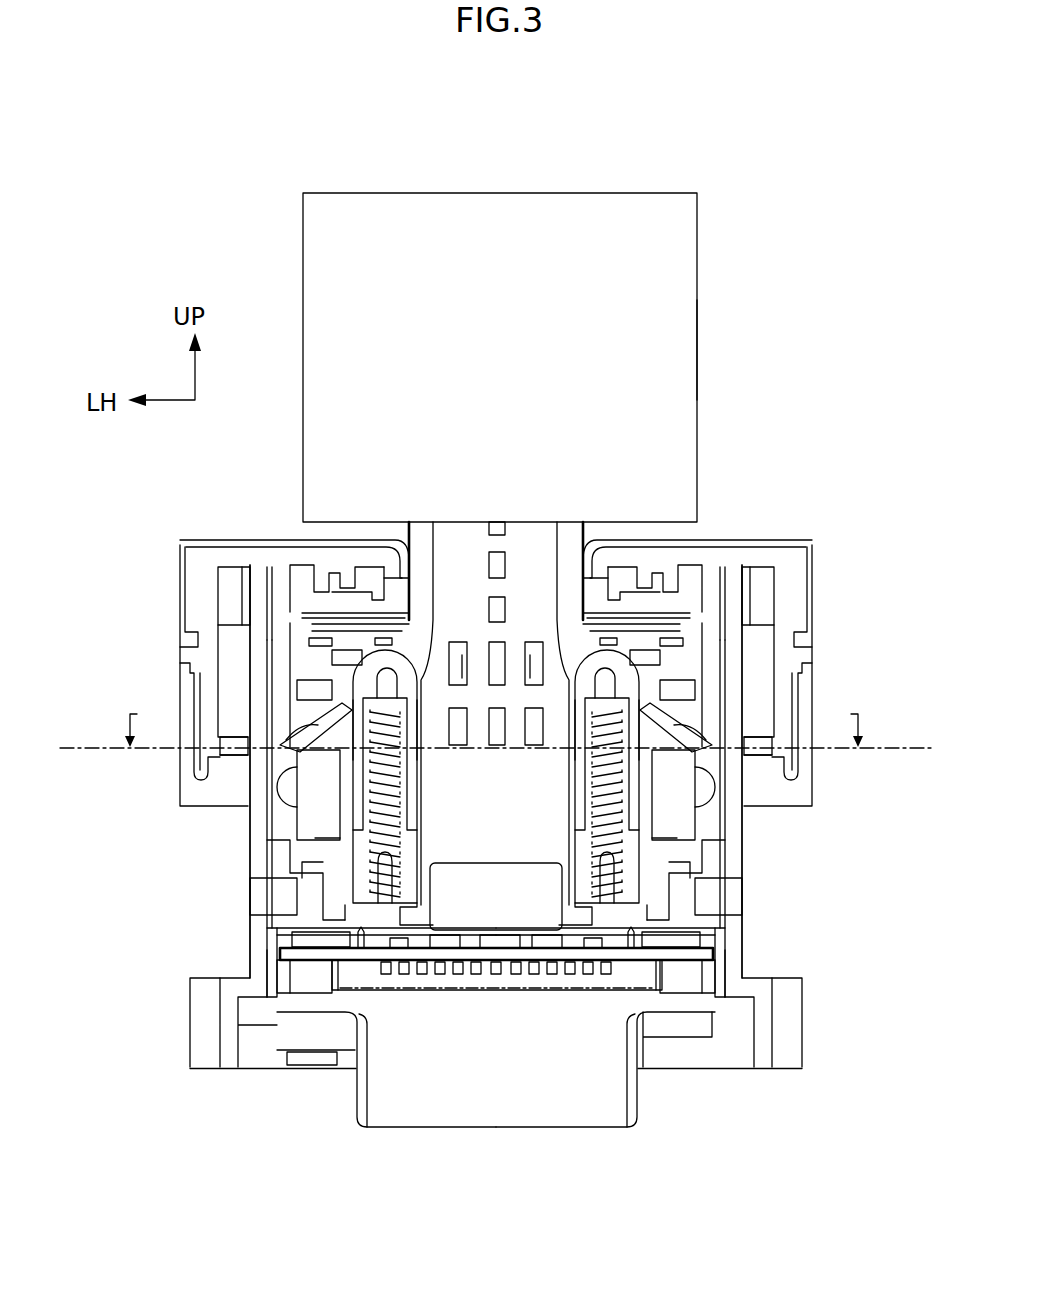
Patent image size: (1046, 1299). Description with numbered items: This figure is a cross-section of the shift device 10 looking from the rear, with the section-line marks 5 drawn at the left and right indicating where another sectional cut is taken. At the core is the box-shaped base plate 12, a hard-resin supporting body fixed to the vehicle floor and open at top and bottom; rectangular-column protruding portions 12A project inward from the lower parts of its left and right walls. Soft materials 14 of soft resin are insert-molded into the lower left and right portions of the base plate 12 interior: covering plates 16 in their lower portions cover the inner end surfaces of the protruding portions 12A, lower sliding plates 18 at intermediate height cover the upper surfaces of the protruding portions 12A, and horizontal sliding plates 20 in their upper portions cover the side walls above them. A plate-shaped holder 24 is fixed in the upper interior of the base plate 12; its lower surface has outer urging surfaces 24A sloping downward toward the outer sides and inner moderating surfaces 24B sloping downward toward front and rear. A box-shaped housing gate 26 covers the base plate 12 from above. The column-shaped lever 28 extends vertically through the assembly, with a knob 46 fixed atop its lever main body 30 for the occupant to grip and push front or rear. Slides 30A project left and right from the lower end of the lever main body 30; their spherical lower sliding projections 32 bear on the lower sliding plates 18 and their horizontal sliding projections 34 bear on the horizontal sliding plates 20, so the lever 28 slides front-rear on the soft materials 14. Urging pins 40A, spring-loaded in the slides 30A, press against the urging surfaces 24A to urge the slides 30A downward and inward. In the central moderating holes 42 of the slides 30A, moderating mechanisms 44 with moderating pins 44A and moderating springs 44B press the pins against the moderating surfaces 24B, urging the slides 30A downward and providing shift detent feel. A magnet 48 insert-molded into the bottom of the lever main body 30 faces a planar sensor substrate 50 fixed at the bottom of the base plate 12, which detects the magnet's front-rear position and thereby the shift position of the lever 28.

The shift device 10 is at (209, 258).
The base plate 12 is at (295, 957).
The protruding portions 12A is at (315, 840).
The soft materials 14 is at (258, 828).
The covering plates 16 is at (310, 898).
The lower sliding plates 18 is at (304, 868).
The horizontal sliding plates 20 is at (265, 781).
The holder 24 is at (325, 690).
The urging surfaces 24A is at (338, 720).
The moderating surfaces 24B is at (345, 688).
The housing gate 26 is at (282, 592).
The lever 28 is at (705, 239).
The lever main body 30 is at (422, 530).
The slides 30A is at (245, 764).
The lower sliding projections 32 is at (292, 856).
The horizontal sliding projections 34 is at (290, 800).
The urging pins 40A is at (310, 735).
The moderating holes 42 is at (318, 902).
The moderating mechanisms 44 is at (608, 649).
The moderating pins 44A is at (368, 690).
The moderating springs 44B is at (360, 872).
The knob 46 is at (700, 352).
The magnet 48 is at (520, 862).
The sensor substrate 50 is at (496, 976).
The section line V-V 5 is at (496, 726).